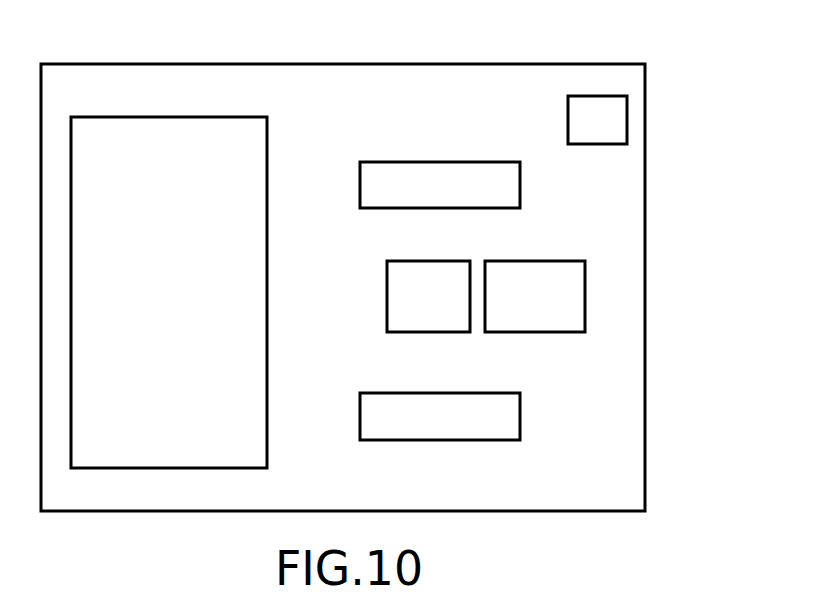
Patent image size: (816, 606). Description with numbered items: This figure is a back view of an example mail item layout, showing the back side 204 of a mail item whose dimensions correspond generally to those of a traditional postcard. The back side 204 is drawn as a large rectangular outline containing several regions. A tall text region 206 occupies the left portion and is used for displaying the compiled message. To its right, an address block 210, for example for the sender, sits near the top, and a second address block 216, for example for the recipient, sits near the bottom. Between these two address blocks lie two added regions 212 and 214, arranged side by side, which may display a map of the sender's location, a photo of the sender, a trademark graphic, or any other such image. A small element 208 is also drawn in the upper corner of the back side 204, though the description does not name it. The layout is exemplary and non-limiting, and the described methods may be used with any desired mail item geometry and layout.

The back side 204 is at (597, 68).
The text region 206 is at (185, 300).
The camera / sensor 208 is at (607, 112).
The address block 210 is at (456, 196).
The added region 212 is at (447, 307).
The added region 214 is at (552, 307).
The second address block 216 is at (456, 428).